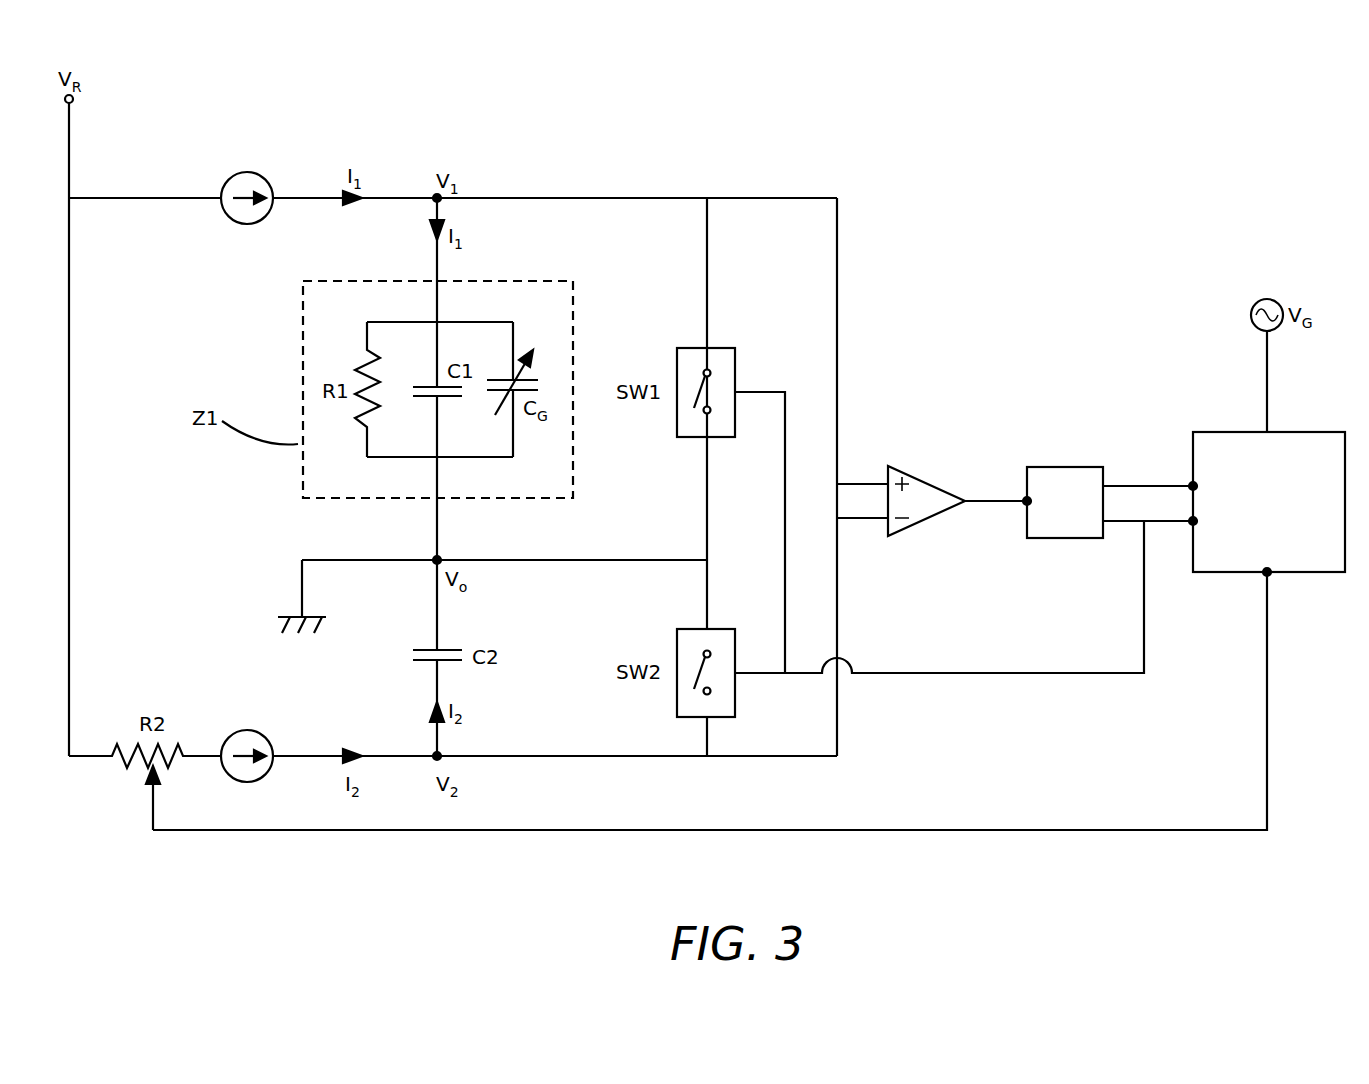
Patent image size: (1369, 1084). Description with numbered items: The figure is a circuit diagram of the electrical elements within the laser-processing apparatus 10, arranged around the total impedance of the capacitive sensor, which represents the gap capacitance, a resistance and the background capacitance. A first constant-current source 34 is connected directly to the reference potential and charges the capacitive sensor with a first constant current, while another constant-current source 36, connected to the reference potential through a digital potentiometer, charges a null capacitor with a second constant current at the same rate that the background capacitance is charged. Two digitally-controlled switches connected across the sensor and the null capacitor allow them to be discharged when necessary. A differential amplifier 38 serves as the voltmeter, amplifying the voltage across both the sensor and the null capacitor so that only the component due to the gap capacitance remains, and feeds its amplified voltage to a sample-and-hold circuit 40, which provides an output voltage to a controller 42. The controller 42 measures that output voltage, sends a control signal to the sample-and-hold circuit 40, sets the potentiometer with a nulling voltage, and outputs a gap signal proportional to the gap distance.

The laser-processing apparatus 10 is at (1165, 143).
The constant-current source 34 is at (244, 224).
The constant-current source 36 is at (246, 729).
The differential amplifier 38 is at (925, 478).
The sample-and-hold circuit 40 is at (1080, 465).
The controller 42 is at (1219, 430).